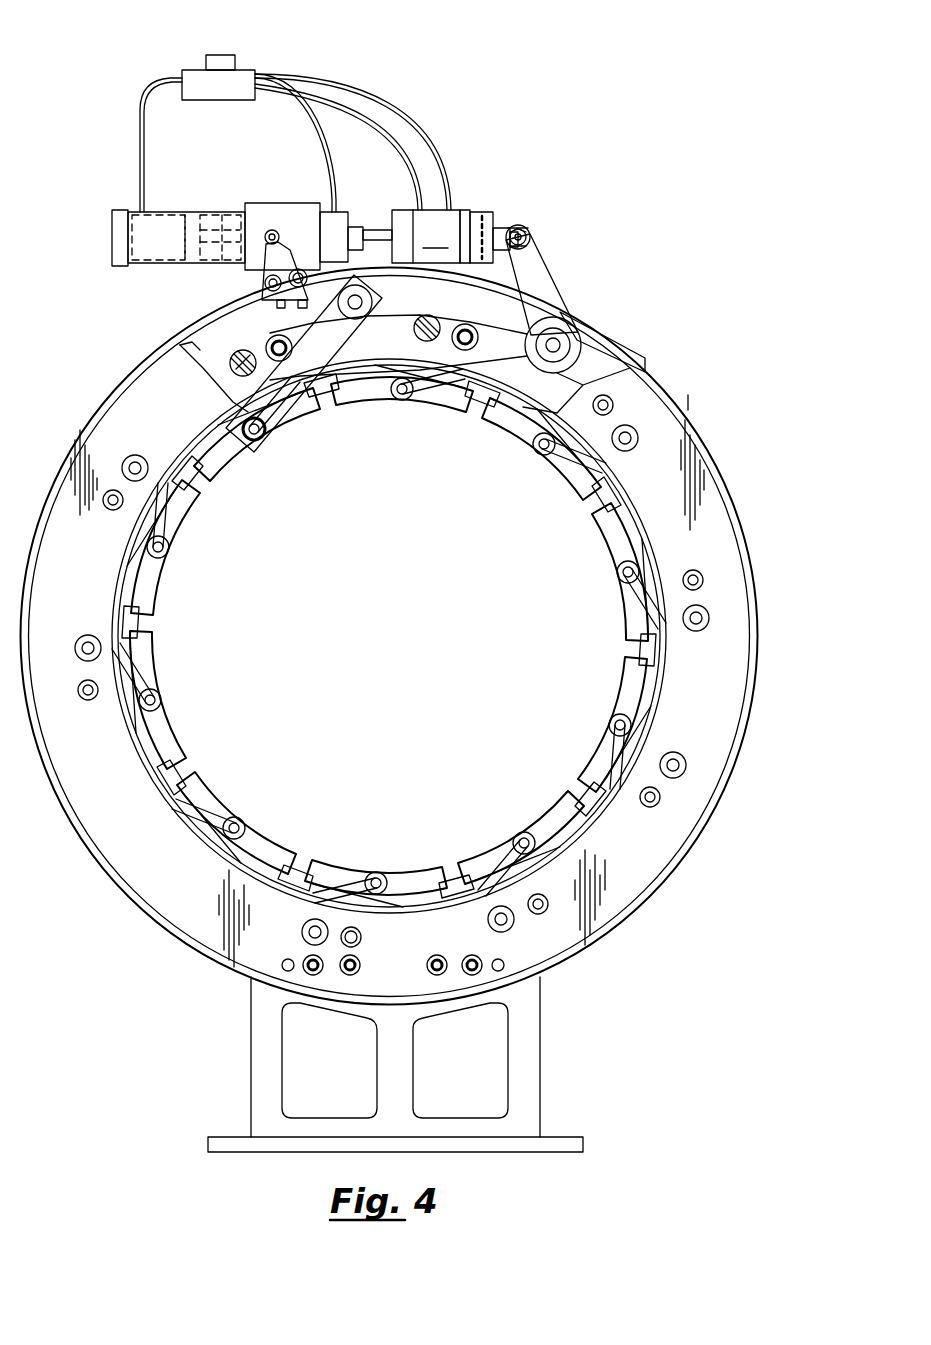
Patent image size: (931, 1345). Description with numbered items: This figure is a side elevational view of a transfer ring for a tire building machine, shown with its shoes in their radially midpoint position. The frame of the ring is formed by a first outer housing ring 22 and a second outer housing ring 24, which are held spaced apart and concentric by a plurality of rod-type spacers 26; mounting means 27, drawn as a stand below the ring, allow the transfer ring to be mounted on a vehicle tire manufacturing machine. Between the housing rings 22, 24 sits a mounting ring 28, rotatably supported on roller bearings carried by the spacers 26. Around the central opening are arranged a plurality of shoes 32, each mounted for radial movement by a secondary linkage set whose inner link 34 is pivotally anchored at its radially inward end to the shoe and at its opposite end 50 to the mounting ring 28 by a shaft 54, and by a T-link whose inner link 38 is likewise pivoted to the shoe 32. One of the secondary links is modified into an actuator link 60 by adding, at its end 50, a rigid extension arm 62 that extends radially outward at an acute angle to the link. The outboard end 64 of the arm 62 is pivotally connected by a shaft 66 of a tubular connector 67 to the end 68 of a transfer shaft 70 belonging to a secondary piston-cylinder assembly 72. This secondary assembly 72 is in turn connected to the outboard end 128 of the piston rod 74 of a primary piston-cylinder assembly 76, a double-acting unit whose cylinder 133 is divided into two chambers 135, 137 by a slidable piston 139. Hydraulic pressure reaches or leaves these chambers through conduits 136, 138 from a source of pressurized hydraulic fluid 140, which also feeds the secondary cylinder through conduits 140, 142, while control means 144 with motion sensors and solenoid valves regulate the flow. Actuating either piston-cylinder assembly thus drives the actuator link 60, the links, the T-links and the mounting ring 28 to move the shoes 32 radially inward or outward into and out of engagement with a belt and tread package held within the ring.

The first outer housing ring 22 is at (137, 403).
The second outer housing ring 24 is at (227, 372).
The rod-type spacers 26 is at (235, 350).
The mounting means 27 is at (542, 1040).
The mounting ring 28 is at (200, 350).
The shoes 32 is at (500, 433).
The inner link 34 is at (280, 393).
The inner link of T-link 38 is at (357, 373).
The end of link 50 is at (374, 298).
The shaft 54 is at (365, 307).
The actuator link 60 is at (543, 268).
The extension arm 62 is at (550, 308).
The outboard end of arm 64 is at (533, 243).
The shaft 66 is at (527, 230).
The tubular connector 67 is at (520, 230).
The end of transfer shaft 68 is at (521, 228).
The transfer shaft 70 is at (497, 227).
The secondary piston-cylinder assembly 72 is at (442, 236).
The piston rod 74 is at (373, 223).
The primary piston-cylinder assembly 76 is at (274, 192).
The outboard end of piston rod 128 is at (380, 227).
The cylinder 133 is at (133, 205).
The chamber 135 is at (158, 223).
The conduit 136 is at (137, 139).
The chamber 137 is at (223, 212).
The conduit 138 is at (288, 106).
The piston 139 is at (183, 233).
The source of pressurized hydraulic fluid 140 is at (182, 78).
The conduit 142 is at (383, 103).
The control means 144 is at (240, 55).